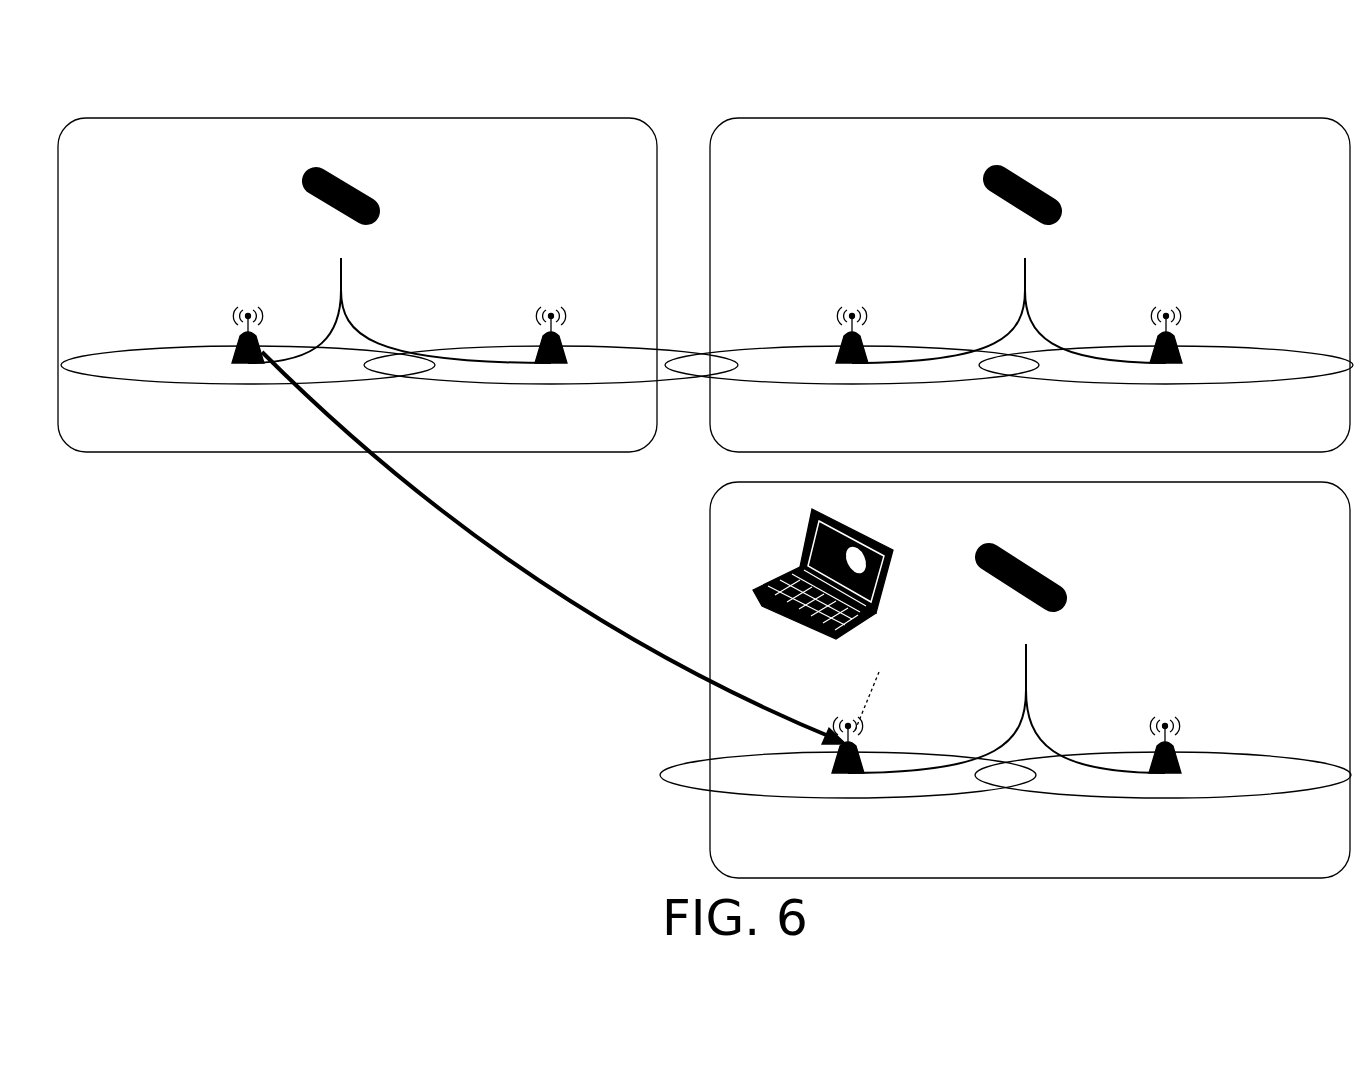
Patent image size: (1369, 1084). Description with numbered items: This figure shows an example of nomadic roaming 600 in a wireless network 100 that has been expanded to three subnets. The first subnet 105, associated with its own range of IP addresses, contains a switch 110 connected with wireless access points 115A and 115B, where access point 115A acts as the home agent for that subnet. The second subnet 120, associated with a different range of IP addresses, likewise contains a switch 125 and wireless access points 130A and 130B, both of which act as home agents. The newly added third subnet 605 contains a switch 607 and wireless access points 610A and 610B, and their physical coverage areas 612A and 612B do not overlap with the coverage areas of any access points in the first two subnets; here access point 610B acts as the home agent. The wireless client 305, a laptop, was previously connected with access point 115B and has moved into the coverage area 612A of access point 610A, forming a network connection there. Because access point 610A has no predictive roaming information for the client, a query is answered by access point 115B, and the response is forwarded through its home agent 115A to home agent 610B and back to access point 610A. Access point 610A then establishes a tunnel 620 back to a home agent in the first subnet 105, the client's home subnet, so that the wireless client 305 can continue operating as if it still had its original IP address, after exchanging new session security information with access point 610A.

The example of nomadic roaming 600 is at (701, 470).
The wireless network 100 is at (705, 470).
The subnet 1 105 is at (398, 285).
The switch 110 is at (399, 272).
The wireless access point 115A is at (248, 376).
The wireless access point 115B is at (551, 362).
The subnet 2 120 is at (1009, 285).
The switch 125 is at (1009, 271).
The wireless access point 130A is at (852, 376).
The wireless access point 130B is at (1166, 376).
The subnet 3 605 is at (979, 680).
The switch 607 is at (1006, 665).
The wireless access point 610A is at (847, 759).
The wireless access point 610B is at (1169, 773).
The physical coverage area 612A is at (694, 789).
The physical coverage area 612B is at (1271, 753).
The wireless client 305 is at (823, 621).
The tunnel 620 is at (550, 594).